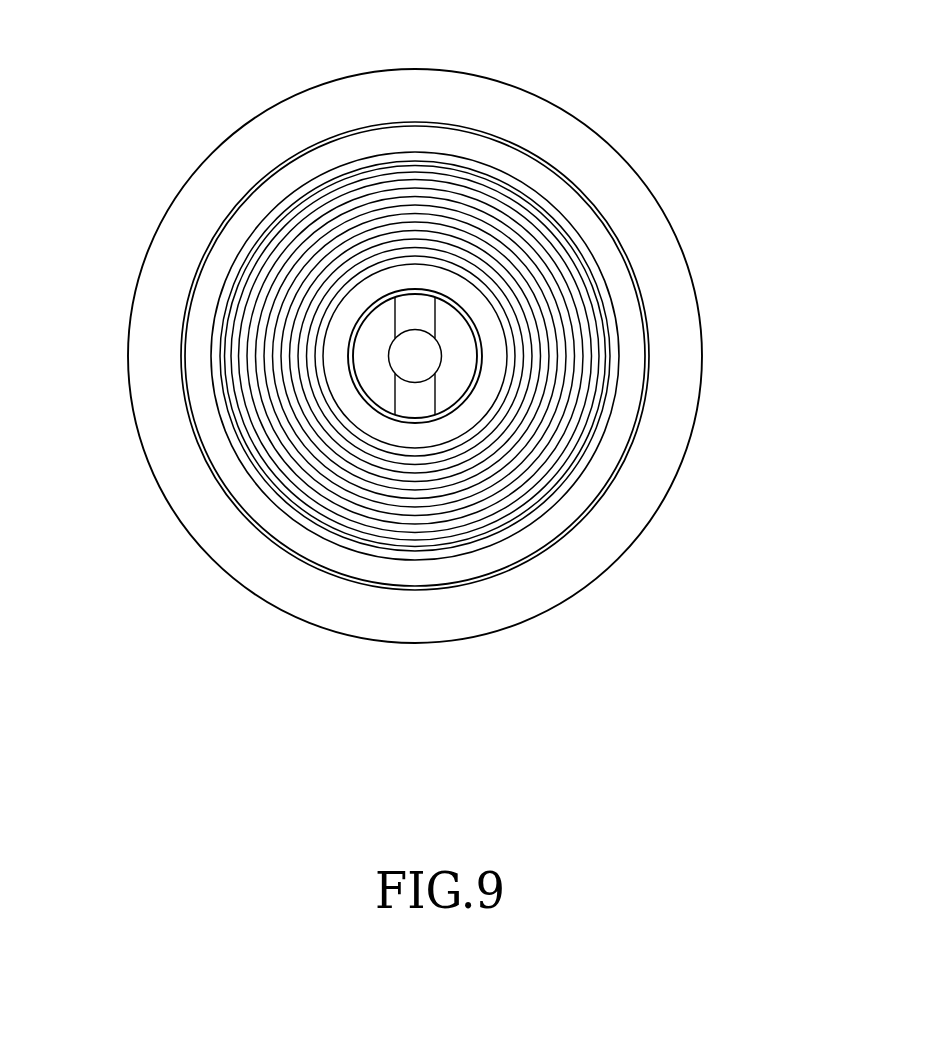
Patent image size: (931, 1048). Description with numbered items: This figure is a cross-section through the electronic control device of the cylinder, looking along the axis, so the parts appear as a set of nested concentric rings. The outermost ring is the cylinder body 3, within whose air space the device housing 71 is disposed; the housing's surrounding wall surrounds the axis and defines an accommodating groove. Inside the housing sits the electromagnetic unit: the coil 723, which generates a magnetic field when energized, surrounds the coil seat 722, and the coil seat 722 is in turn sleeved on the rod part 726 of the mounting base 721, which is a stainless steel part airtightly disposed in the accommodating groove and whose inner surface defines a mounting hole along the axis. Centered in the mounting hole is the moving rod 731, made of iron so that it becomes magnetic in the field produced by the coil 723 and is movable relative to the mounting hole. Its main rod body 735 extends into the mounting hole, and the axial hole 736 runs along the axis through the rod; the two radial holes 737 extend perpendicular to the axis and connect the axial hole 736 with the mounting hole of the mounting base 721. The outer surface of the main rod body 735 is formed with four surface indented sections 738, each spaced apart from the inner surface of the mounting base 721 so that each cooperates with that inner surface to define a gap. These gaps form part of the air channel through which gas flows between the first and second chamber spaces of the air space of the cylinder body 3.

The cylinder body 3 is at (617, 185).
The device housing 71 is at (542, 175).
The coil seat 722 is at (255, 230).
The coil 723 is at (320, 212).
The mounting base 721 is at (532, 356).
The rod part 726 is at (600, 410).
The surface indented sections 738 is at (404, 300).
The moving rod 731 is at (323, 491).
The main rod body 735 is at (415, 356).
The radial holes 737 is at (431, 300).
The axial hole 736 is at (430, 358).